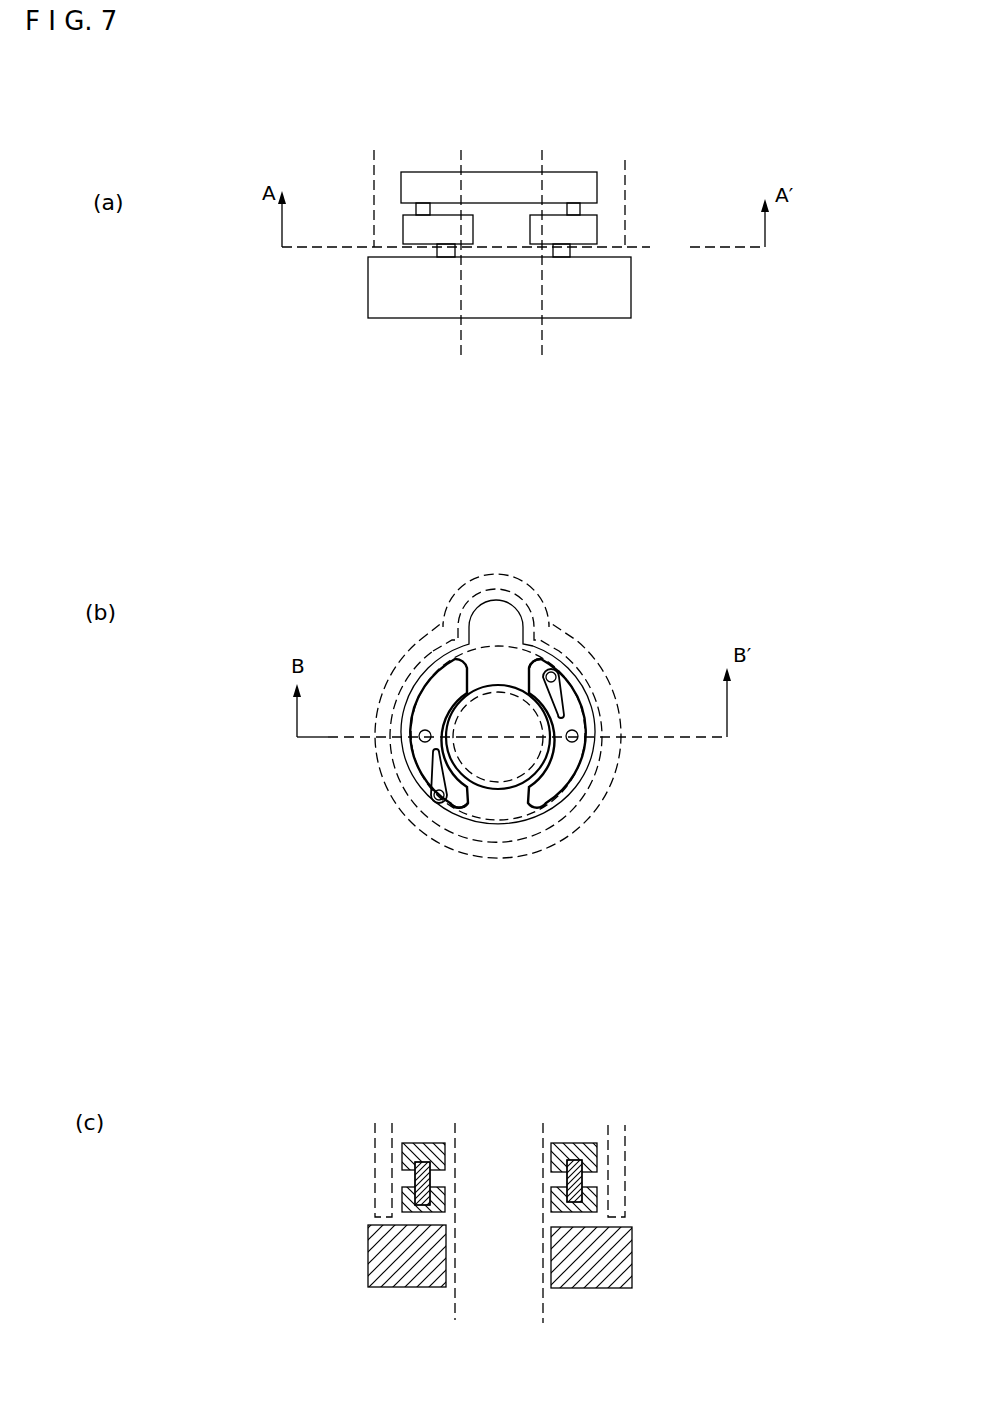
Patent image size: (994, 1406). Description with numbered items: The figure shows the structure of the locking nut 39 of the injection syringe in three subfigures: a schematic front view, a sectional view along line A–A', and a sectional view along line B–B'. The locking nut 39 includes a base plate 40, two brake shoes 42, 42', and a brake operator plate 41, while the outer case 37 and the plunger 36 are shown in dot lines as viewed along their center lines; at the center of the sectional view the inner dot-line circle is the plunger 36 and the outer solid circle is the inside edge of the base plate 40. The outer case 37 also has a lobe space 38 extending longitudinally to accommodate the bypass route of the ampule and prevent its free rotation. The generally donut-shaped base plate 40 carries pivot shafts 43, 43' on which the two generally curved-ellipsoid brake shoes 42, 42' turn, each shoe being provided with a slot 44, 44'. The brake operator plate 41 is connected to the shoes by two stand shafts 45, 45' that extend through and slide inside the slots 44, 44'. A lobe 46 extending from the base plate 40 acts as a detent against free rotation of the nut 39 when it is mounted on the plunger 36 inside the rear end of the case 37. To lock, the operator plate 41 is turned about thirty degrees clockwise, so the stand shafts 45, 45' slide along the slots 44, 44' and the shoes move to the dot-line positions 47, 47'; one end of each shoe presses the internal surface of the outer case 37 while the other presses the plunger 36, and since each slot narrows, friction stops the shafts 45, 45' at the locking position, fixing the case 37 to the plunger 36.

The plunger 36 is at (462, 158).
The outer case 37 is at (372, 165).
The lobe space 38 is at (466, 609).
The locking nut 39 is at (388, 208).
The base plate 40 is at (587, 187).
The brake operator plate 41 is at (620, 290).
The brake shoe 42 is at (360, 729).
The brake shoe 42' is at (657, 739).
The pivot shaft 43 is at (339, 701).
The pivot shaft 43' is at (672, 703).
The slot 44 is at (367, 776).
The slot 44' is at (632, 699).
The stand shaft 45 is at (392, 551).
The stand shaft 45' is at (629, 467).
The lobe 46 is at (502, 632).
The displaced shoe position 47 is at (374, 817).
The displaced shoe position 47' is at (619, 632).